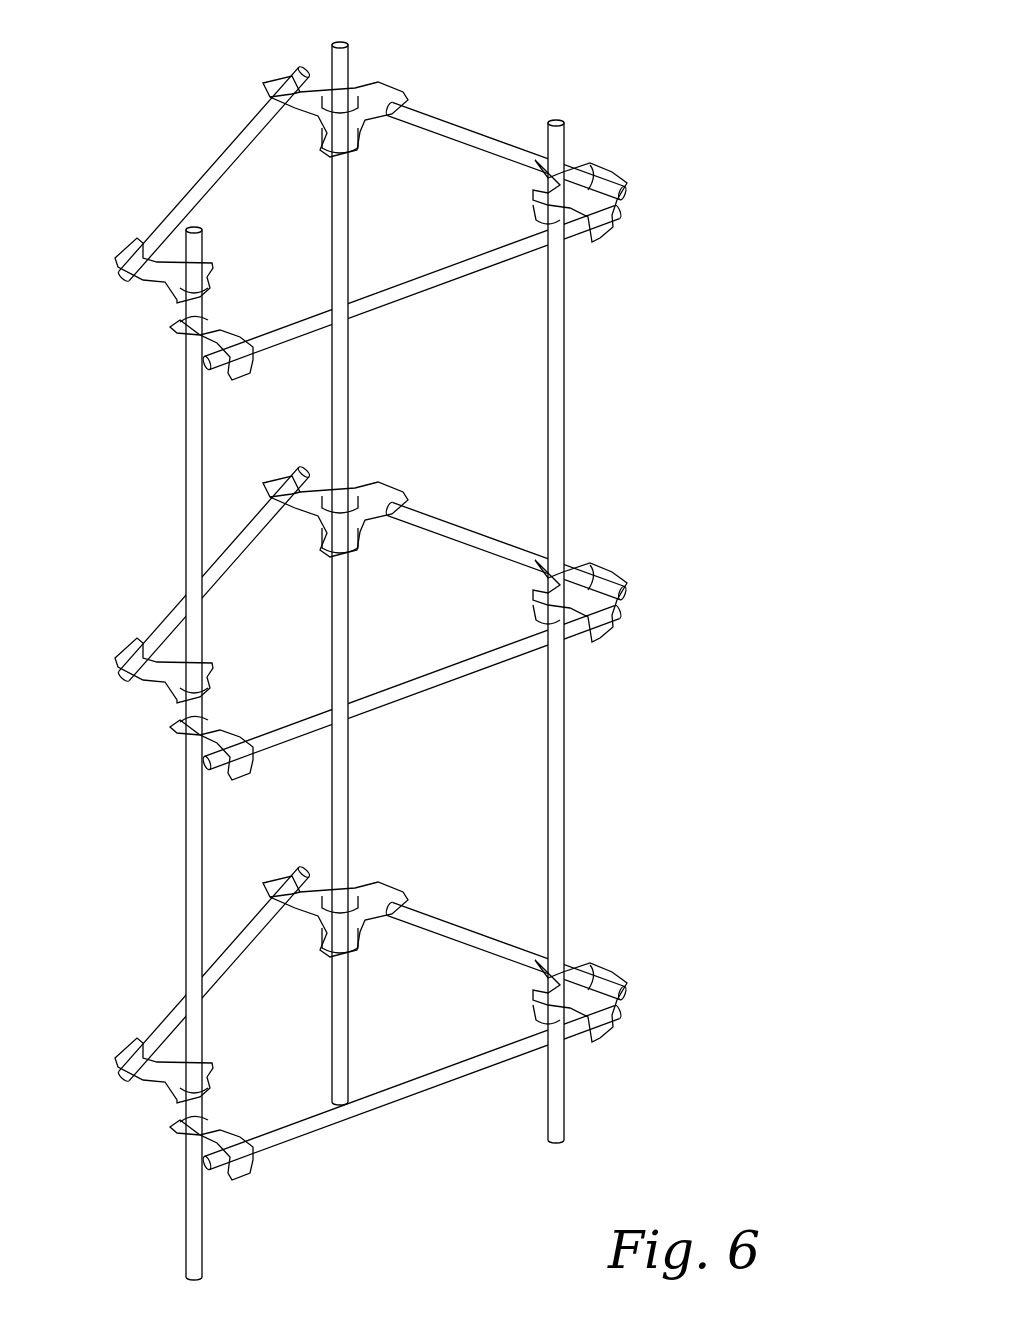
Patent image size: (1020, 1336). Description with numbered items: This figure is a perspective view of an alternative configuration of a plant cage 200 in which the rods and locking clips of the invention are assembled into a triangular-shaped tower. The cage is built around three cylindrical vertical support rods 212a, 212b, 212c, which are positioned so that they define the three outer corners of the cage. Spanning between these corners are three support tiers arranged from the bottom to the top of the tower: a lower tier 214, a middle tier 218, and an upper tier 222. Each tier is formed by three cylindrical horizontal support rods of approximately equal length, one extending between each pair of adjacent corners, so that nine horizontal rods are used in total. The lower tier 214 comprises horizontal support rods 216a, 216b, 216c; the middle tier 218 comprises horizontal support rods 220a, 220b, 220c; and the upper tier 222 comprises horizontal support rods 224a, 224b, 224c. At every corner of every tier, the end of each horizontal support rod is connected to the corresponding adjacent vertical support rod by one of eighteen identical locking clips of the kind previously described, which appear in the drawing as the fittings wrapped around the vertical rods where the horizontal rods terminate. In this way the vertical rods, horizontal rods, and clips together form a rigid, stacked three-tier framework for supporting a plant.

The plant cage 200 is at (548, 44).
The vertical support rod 212a is at (342, 61).
The vertical support rod 212b is at (563, 135).
The vertical support rod 212c is at (201, 243).
The lower tier 214 is at (673, 933).
The horizontal support rod 216a is at (431, 1092).
The horizontal support rod 216b is at (246, 942).
The horizontal support rod 216c is at (470, 921).
The middle tier 218 is at (673, 535).
The horizontal support rod 220a is at (441, 682).
The horizontal support rod 220b is at (246, 540).
The horizontal support rod 220c is at (455, 537).
The upper tier 222 is at (673, 135).
The horizontal support rod 224a is at (431, 272).
The horizontal support rod 224b is at (200, 193).
The horizontal support rod 224c is at (460, 128).